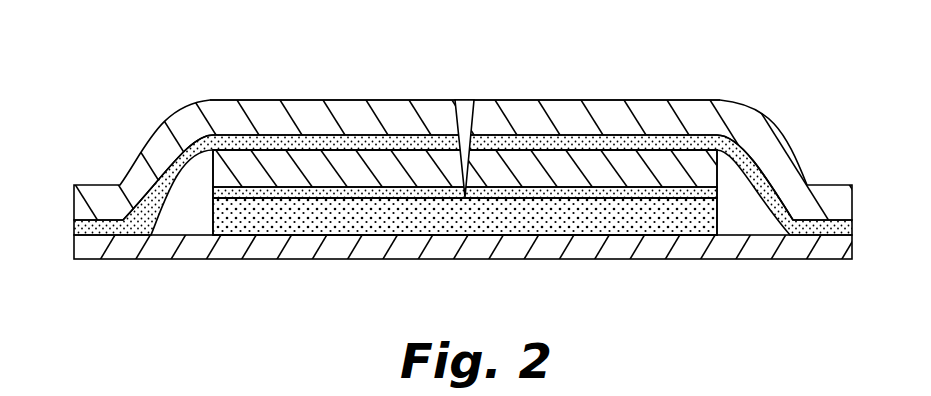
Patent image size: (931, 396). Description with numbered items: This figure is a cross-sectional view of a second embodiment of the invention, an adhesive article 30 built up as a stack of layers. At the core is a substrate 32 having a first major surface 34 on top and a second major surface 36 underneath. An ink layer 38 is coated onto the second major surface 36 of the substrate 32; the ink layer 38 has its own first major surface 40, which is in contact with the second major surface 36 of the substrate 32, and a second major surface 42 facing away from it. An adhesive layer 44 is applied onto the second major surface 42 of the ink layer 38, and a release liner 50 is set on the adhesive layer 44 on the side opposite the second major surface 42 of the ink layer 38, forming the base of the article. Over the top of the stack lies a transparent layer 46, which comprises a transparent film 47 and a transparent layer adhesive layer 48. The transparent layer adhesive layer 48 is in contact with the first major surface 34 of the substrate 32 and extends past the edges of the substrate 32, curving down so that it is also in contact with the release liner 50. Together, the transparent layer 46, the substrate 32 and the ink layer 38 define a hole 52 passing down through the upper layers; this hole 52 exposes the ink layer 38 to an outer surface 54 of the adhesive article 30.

The adhesive article 30 is at (732, 54).
The substrate 32 is at (464, 181).
The first major surface 34 is at (673, 170).
The second major surface 36 is at (672, 225).
The ink layer 38 is at (212, 190).
The first major surface 40 is at (227, 177).
The second major surface 42 is at (234, 205).
The adhesive layer 44 is at (342, 220).
The transparent layer 46 is at (471, 130).
The transparent film 47 is at (297, 117).
The transparent layer adhesive layer 48 is at (77, 228).
The release liner 50 is at (473, 252).
The hole 52 is at (463, 107).
The outer surface 54 is at (555, 100).